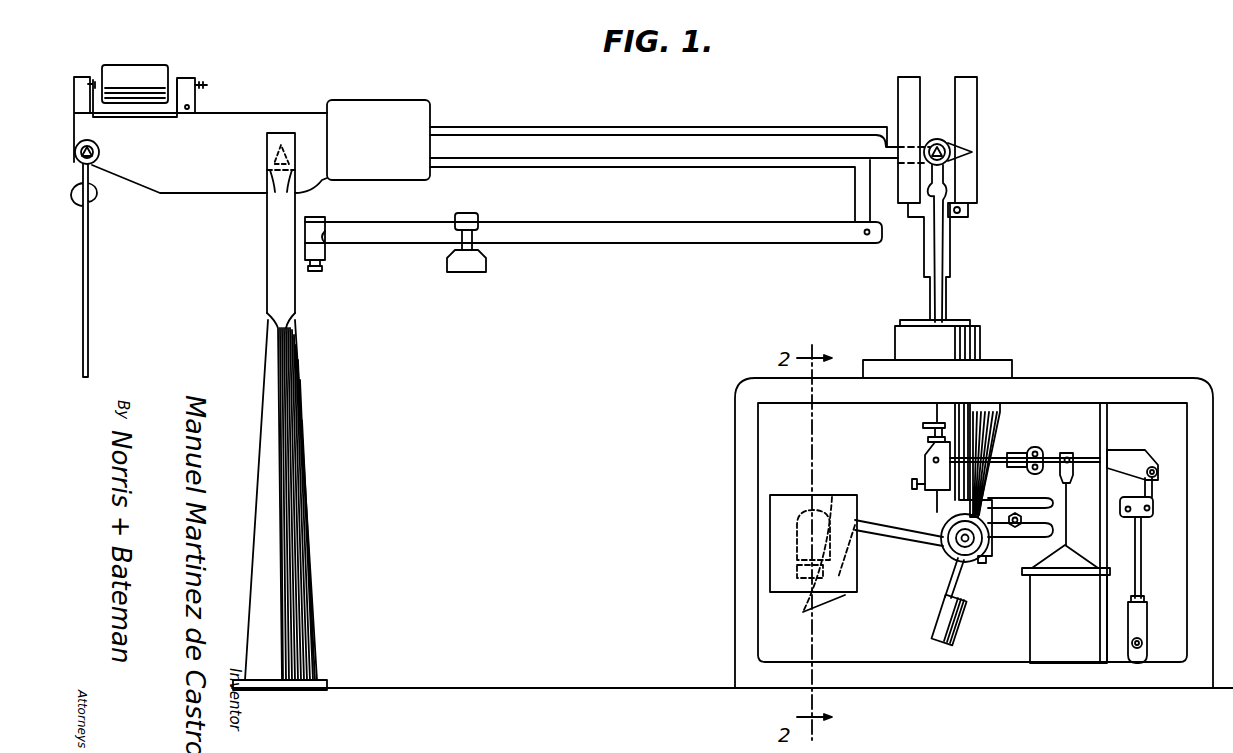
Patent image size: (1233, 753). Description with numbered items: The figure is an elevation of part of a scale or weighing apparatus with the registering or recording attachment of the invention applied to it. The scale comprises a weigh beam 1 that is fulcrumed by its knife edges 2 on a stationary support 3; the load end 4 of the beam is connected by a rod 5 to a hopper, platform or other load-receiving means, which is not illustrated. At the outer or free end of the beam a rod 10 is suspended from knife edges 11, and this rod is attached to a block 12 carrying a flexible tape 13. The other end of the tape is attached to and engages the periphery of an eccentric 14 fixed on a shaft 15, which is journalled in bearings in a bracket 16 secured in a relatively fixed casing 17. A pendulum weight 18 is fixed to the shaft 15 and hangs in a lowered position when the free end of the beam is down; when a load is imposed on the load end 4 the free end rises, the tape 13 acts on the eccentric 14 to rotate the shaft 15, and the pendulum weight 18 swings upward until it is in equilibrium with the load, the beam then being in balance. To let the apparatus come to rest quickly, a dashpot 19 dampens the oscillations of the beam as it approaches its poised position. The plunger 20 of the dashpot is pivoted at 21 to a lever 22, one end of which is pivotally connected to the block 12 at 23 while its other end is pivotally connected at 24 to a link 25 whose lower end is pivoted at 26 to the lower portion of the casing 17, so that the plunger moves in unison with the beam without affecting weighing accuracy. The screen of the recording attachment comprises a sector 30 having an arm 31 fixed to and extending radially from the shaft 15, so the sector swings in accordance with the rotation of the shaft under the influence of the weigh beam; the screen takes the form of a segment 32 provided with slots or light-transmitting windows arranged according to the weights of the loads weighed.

The weigh beam 1 is at (642, 147).
The knife edges 2 is at (272, 152).
The stationary support 3 is at (297, 445).
The load end 4 is at (147, 168).
The rod 5 is at (90, 317).
The rod 10 is at (941, 247).
The knife edges 11 is at (947, 143).
The block 12 is at (925, 448).
The flexible tape 13 is at (933, 496).
The eccentric 14 is at (943, 542).
The shaft 15 is at (967, 545).
The bracket 16 is at (982, 447).
The casing 17 is at (1047, 389).
The pendulum weight 18 is at (940, 613).
The dashpot 19 is at (1066, 604).
The plunger 20 is at (1066, 497).
The pivot 21 is at (1068, 455).
The lever 22 is at (1048, 447).
The pivot 23 is at (934, 459).
The pivot 24 is at (1157, 465).
The link 25 is at (1138, 567).
The pivot 26 is at (1130, 645).
The sector 30 is at (826, 498).
The arm 31 is at (878, 523).
The segment 32 is at (803, 612).